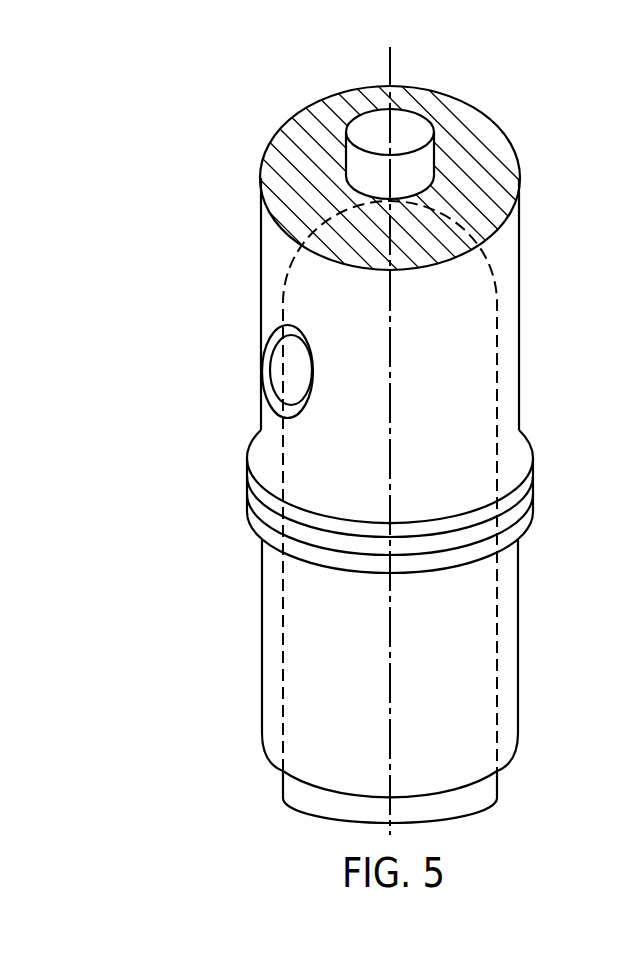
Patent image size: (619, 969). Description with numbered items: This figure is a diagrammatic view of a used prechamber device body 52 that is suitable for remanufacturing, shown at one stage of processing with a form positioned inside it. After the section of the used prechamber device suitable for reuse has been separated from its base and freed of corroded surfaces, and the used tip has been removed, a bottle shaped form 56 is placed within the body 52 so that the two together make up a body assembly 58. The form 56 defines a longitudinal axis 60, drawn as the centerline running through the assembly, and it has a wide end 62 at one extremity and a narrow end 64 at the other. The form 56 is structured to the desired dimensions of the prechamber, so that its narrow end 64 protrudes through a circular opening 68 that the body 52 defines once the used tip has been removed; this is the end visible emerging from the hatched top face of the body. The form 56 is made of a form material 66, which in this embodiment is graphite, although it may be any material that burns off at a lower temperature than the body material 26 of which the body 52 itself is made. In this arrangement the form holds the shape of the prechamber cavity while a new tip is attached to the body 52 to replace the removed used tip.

The body assembly 58 is at (384, 428).
The longitudinal axis 60 is at (391, 60).
The narrow end 64 is at (364, 118).
The circular opening 68 is at (427, 210).
The body material 26 is at (508, 286).
The body 52 is at (520, 366).
The form 56 is at (293, 372).
The wide end 62 is at (296, 808).
The form material 66 is at (477, 800).